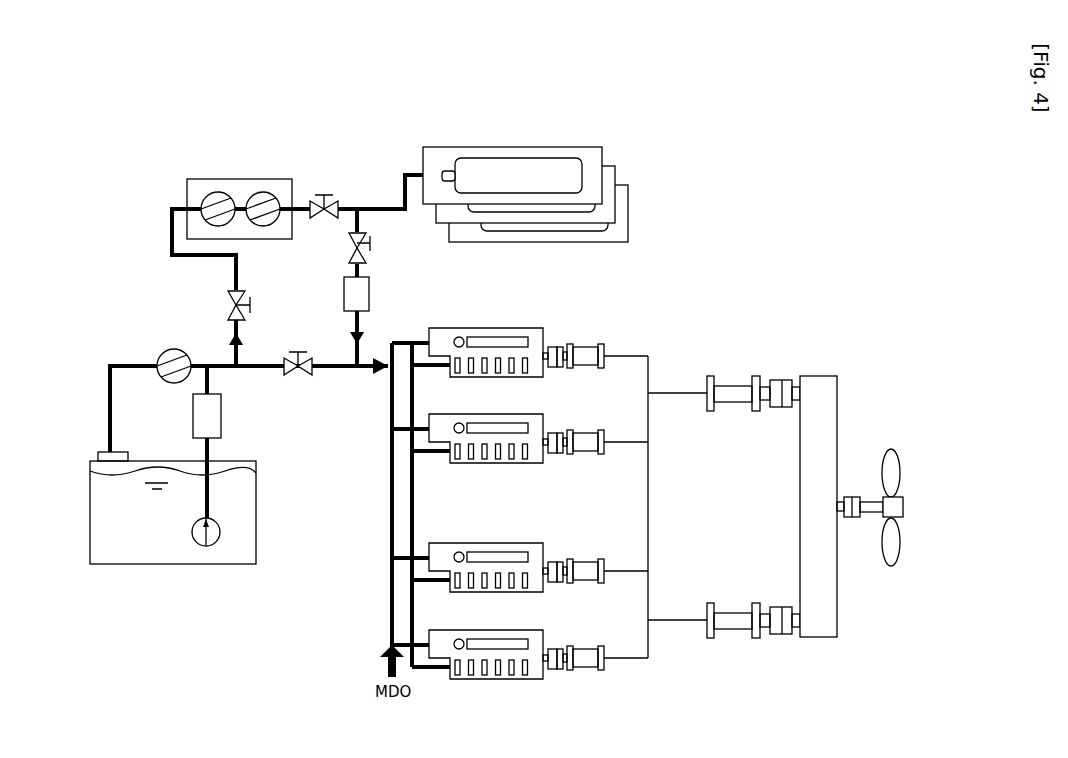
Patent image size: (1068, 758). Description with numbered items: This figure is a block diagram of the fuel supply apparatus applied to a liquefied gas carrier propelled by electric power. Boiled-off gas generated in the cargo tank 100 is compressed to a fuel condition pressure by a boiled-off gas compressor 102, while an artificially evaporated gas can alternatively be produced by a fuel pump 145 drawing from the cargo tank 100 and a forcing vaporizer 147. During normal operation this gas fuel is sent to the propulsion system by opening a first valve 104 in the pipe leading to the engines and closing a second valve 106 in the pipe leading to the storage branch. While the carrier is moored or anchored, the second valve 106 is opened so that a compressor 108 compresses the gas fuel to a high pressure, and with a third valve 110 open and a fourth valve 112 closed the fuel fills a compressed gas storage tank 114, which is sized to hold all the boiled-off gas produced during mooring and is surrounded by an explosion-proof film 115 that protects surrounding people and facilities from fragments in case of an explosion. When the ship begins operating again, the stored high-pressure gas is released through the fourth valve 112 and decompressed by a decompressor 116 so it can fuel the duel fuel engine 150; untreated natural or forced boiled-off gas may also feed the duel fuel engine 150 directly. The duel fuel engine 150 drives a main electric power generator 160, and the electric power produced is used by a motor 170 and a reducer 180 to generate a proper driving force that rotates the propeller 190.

The cargo tank 100 is at (256, 535).
The boiled-off gas compressor 102 is at (168, 352).
The first valve 104 is at (298, 377).
The second valve 106 is at (228, 303).
The compressor 108 is at (212, 179).
The third valve 110 is at (322, 195).
The fourth valve 112 is at (371, 244).
The compressed gas storage tank 114 is at (547, 147).
The explosion-proof film 115 is at (592, 158).
The decompressor 116 is at (369, 288).
The fuel pump 145 is at (212, 546).
The forcing vaporizer 147 is at (212, 412).
The duel fuel engine 150 is at (487, 328).
The main electric power generator 160 is at (587, 345).
The motor 170 is at (732, 386).
The reducer 180 is at (820, 392).
The propeller 190 is at (900, 505).